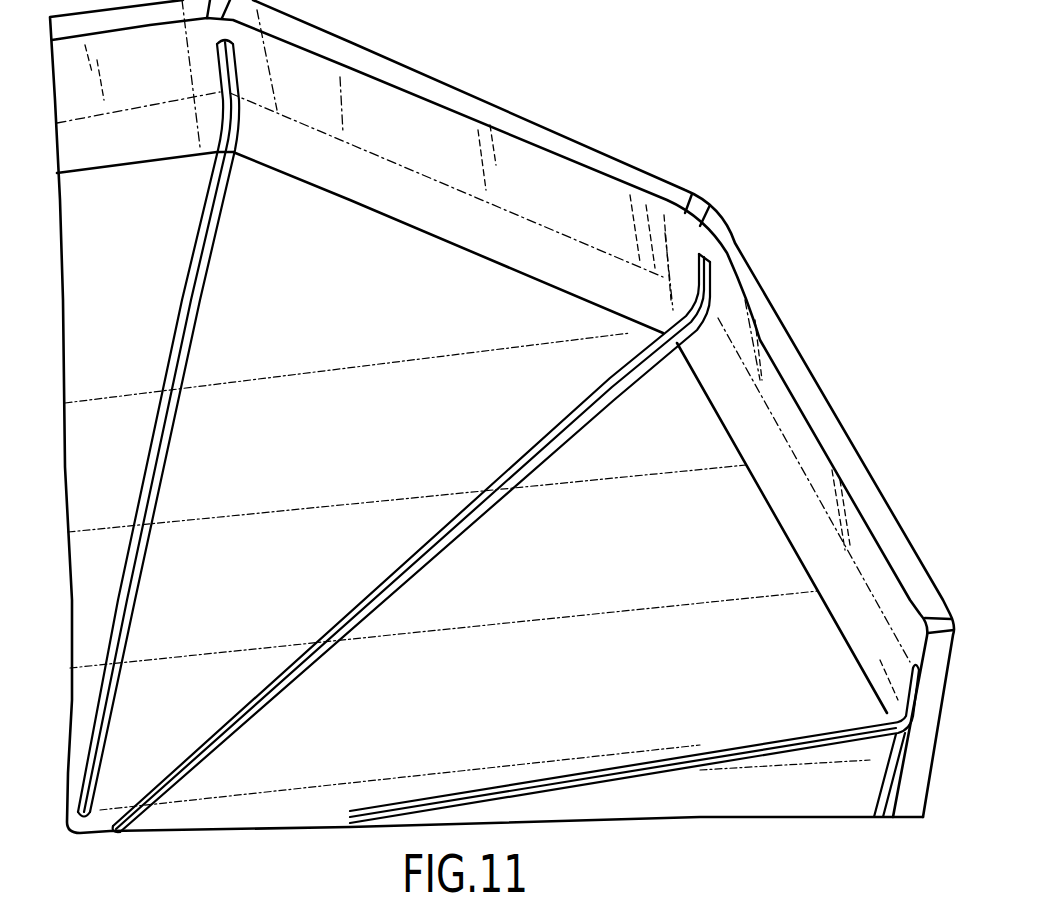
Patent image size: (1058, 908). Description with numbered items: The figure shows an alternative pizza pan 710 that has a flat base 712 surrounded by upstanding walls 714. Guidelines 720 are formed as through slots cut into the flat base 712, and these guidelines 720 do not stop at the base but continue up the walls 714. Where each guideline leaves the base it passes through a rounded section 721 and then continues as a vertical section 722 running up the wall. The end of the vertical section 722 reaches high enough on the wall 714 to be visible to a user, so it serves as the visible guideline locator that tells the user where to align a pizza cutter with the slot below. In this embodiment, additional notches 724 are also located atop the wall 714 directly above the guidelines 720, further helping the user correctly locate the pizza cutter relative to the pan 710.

The pizza pan 710 is at (780, 108).
The flat base 712 is at (760, 537).
The walls 714 is at (522, 183).
The guidelines 720 is at (583, 427).
The rounded section 721 is at (705, 326).
The vertical section 722 is at (710, 280).
The notches 724 is at (709, 202).